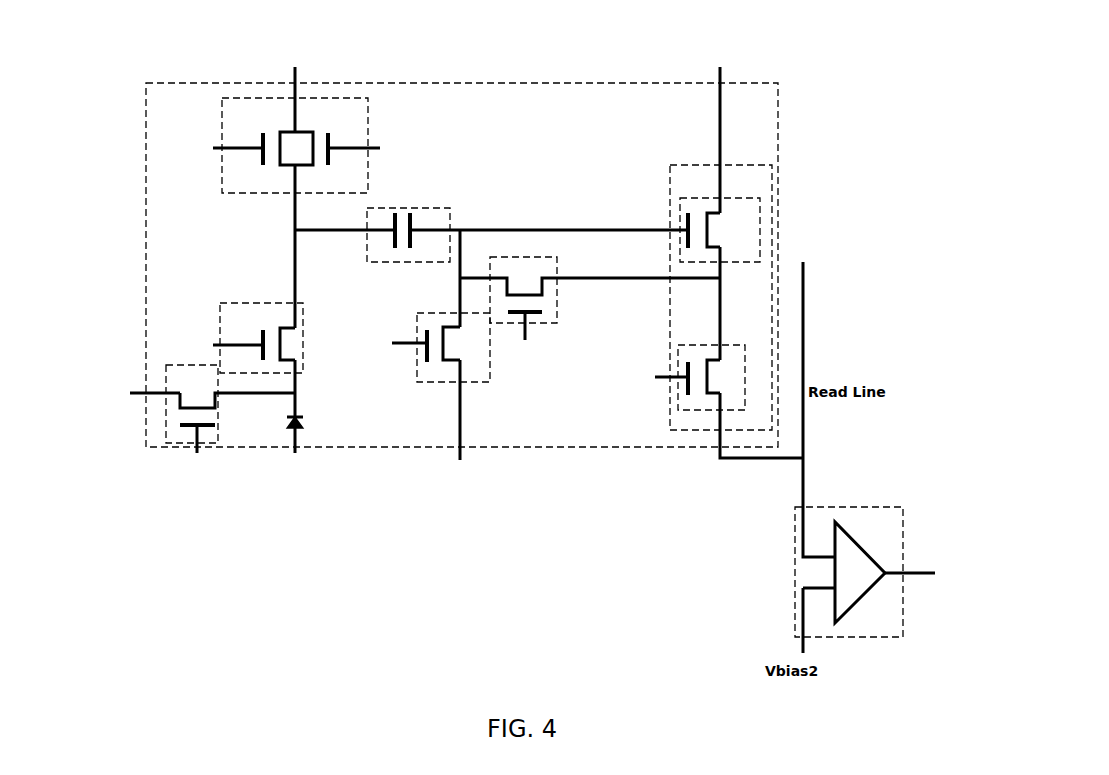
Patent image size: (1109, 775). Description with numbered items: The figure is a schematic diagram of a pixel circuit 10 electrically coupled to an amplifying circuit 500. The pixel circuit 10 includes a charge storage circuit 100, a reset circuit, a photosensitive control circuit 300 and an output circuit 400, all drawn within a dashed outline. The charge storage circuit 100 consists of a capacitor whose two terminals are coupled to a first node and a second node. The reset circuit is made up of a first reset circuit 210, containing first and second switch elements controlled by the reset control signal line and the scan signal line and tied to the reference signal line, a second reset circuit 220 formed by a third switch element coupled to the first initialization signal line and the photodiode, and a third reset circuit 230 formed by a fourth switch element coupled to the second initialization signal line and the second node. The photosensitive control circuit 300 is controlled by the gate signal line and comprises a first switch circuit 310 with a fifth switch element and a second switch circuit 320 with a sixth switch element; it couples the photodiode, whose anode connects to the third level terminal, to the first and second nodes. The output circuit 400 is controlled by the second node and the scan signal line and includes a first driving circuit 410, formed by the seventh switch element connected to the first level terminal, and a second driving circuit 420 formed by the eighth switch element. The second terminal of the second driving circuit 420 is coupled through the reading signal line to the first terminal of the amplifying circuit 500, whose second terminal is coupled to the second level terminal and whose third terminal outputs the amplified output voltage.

The pixel circuit 10 is at (540, 83).
The charge storage circuit 100 is at (440, 208).
The first reset circuit 210 is at (373, 130).
The second reset circuit 220 is at (218, 412).
The third reset circuit 230 is at (488, 382).
The photosensitive control circuit 300 is at (358, 276).
The first switch circuit 310 is at (303, 360).
The second switch circuit 320 is at (490, 295).
The output circuit 400 is at (728, 163).
The first driving circuit 410 is at (723, 197).
The second driving circuit 420 is at (728, 345).
The amplifying circuit 500 is at (892, 505).